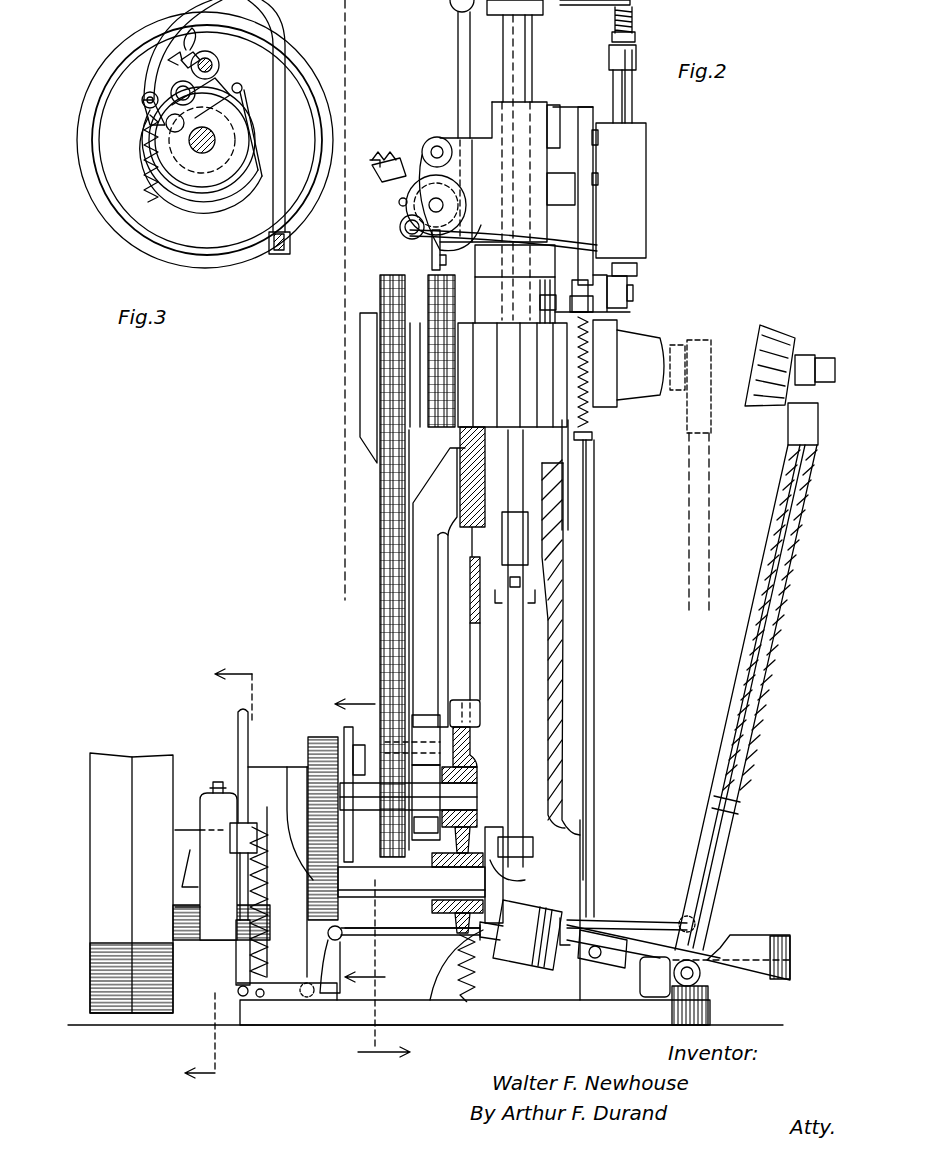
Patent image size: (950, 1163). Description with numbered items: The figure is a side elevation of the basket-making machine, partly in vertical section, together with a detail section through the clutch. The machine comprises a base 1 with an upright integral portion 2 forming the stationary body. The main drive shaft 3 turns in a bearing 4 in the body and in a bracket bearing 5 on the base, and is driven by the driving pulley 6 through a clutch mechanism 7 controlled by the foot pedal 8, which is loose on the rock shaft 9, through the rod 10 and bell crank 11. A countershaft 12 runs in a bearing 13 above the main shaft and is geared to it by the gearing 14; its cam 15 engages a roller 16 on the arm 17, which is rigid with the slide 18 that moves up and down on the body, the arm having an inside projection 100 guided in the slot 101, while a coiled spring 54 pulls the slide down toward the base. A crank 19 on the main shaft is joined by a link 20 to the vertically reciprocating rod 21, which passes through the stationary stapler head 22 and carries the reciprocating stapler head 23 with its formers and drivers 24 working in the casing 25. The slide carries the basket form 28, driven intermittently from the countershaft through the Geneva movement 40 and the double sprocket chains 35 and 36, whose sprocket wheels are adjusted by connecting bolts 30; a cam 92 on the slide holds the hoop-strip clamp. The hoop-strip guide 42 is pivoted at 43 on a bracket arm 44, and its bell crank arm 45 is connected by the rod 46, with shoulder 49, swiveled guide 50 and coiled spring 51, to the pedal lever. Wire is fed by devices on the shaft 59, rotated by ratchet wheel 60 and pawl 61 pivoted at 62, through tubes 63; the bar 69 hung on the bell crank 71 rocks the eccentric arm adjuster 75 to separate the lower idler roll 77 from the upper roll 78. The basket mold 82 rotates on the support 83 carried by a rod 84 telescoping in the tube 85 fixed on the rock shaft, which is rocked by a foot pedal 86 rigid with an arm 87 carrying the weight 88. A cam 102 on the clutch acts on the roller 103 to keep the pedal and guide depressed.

In FIG. 2, the base 1 is at (482, 1030).
In FIG. 2, the upright integral portion 2 is at (565, 686).
In FIG. 3, the main drive shaft 3 is at (207, 152).
In FIG. 2, the main drive shaft 3 is at (408, 955).
In FIG. 2, the bearing 4 is at (480, 845).
In FIG. 2, the bracket bearing 5 is at (290, 935).
In FIG. 3, the driving pulley 6 is at (95, 205).
In FIG. 2, the driving pulley 6 is at (118, 775).
In FIG. 3, the clutch mechanism 7 is at (182, 165).
In FIG. 2, the clutch mechanism 7 is at (220, 905).
In FIG. 2, the foot pedal 8 is at (770, 935).
In FIG. 2, the rock shaft 9 is at (702, 978).
In FIG. 2, the rod 10 is at (632, 922).
In FIG. 3, the bell crank 11 is at (282, 256).
In FIG. 2, the bell crank 11 is at (330, 965).
In FIG. 2, the countershaft 12 is at (470, 790).
In FIG. 2, the bearing 13 is at (465, 757).
In FIG. 2, the gearing 14 is at (325, 768).
In FIG. 2, the cam 15 is at (408, 796).
In FIG. 2, the roller 16 is at (420, 735).
In FIG. 2, the arm 17 is at (436, 560).
In FIG. 2, the slide 18 is at (565, 488).
In FIG. 2, the crank 19 is at (520, 882).
In FIG. 2, the link 20 is at (520, 642).
In FIG. 2, the vertically reciprocating rod 21 is at (527, 52).
In FIG. 2, the stationary stapler head 22 is at (520, 185).
In FIG. 2, the vertically reciprocating stapler head 23 is at (545, 10).
In FIG. 2, the stapler formers and drivers 24 is at (625, 92).
In FIG. 2, the casing 25 is at (625, 152).
In FIG. 2, the basket form 28 is at (645, 345).
In FIG. 2, the connecting bolts 30 is at (395, 318).
In FIG. 2, the double sprocket chain 35 is at (440, 358).
In FIG. 2, the sprocket chain 36 is at (392, 500).
In FIG. 2, the Geneva movement 40 is at (355, 765).
In FIG. 2, the hoop-strip guide 42 is at (637, 270).
In FIG. 2, the pivot 43 is at (633, 292).
In FIG. 2, the stationary bracket arm 44 is at (585, 220).
In FIG. 2, the bell crank arm 45 is at (570, 290).
In FIG. 2, the rod 46 is at (597, 808).
In FIG. 2, the rigid shoulder 49 is at (600, 455).
In FIG. 2, the swiveled guide 50 is at (594, 306).
In FIG. 2, the coiled spring 51 is at (590, 442).
In FIG. 2, the coiled spring 54 is at (465, 935).
In FIG. 2, the intermittently rotated shaft 59 is at (430, 208).
In FIG. 2, the ratchet wheel 60 is at (418, 145).
In FIG. 2, the ratchet pawl 61 is at (458, 47).
In FIG. 2, the pivot 62 is at (452, 8).
In FIG. 2, the tube 63 is at (515, 284).
In FIG. 2, the horizontal bar 69 is at (470, 240).
In FIG. 2, the bell crank 71 is at (432, 262).
In FIG. 2, the eccentric arm adjuster 75 is at (398, 160).
In FIG. 2, the lower idler roll 77 is at (400, 232).
In FIG. 2, the upper roll 78 is at (400, 202).
In FIG. 2, the basket mold 82 is at (778, 345).
In FIG. 2, the support 83 is at (788, 438).
In FIG. 2, the rod 84 is at (772, 608).
In FIG. 2, the tube 85 is at (760, 700).
In FIG. 2, the foot pedal 86 is at (790, 972).
In FIG. 2, the arm 87 is at (560, 965).
In FIG. 2, the weight 88 is at (487, 968).
In FIG. 2, the cam 92 is at (585, 420).
In FIG. 2, the inside projection 100 is at (483, 692).
In FIG. 2, the slot 101 is at (475, 650).
In FIG. 3, the cam 102 is at (188, 160).
In FIG. 3, the roller 103 is at (178, 85).